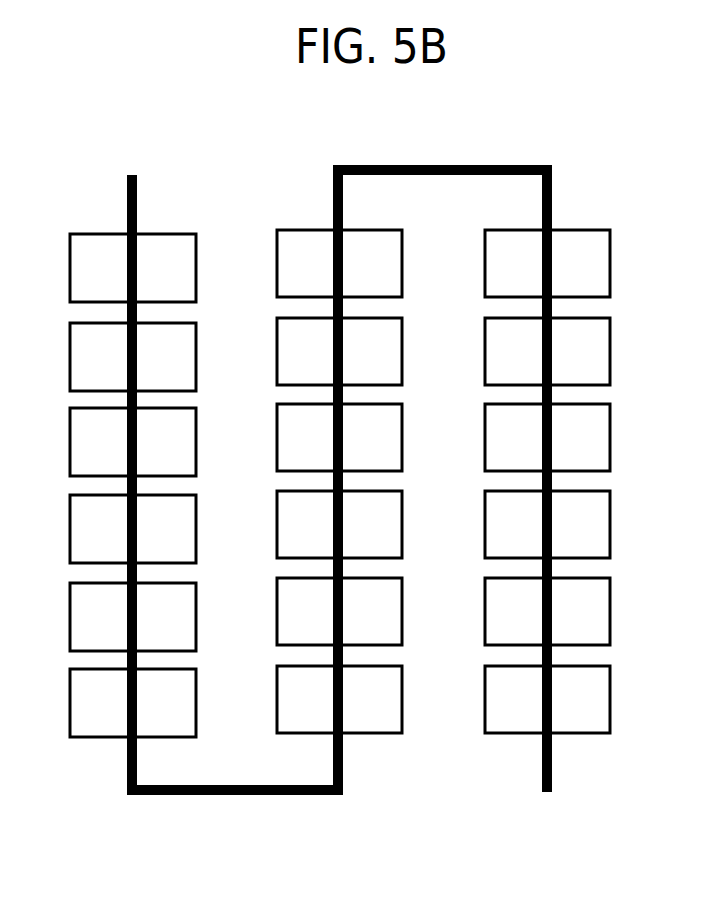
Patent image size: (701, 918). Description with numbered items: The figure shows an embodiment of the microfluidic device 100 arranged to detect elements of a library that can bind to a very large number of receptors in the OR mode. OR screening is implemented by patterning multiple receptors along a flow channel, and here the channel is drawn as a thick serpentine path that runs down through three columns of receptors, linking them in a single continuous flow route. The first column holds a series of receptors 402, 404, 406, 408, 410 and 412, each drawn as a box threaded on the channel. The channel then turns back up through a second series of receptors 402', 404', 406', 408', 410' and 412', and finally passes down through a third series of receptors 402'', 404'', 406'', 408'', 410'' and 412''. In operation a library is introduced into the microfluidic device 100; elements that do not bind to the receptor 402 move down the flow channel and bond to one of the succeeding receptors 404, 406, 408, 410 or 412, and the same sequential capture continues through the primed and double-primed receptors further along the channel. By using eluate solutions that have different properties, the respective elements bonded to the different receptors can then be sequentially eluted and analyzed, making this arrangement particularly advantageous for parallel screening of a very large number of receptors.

The microfluidic device 100 is at (573, 155).
The receptor 402 is at (133, 268).
The receptor 404 is at (133, 357).
The receptor 406 is at (133, 442).
The receptor 408 is at (133, 529).
The receptor 410 is at (133, 617).
The receptor 412 is at (133, 703).
The receptor 402' is at (339, 263).
The receptor 404' is at (339, 351).
The receptor 406' is at (339, 437).
The receptor 408' is at (339, 524).
The receptor 410' is at (339, 611).
The receptor 412' is at (339, 699).
The receptor 402'' is at (547, 263).
The receptor 404'' is at (547, 351).
The receptor 406'' is at (547, 437).
The receptor 408'' is at (547, 524).
The receptor 410'' is at (547, 611).
The receptor 412'' is at (547, 699).